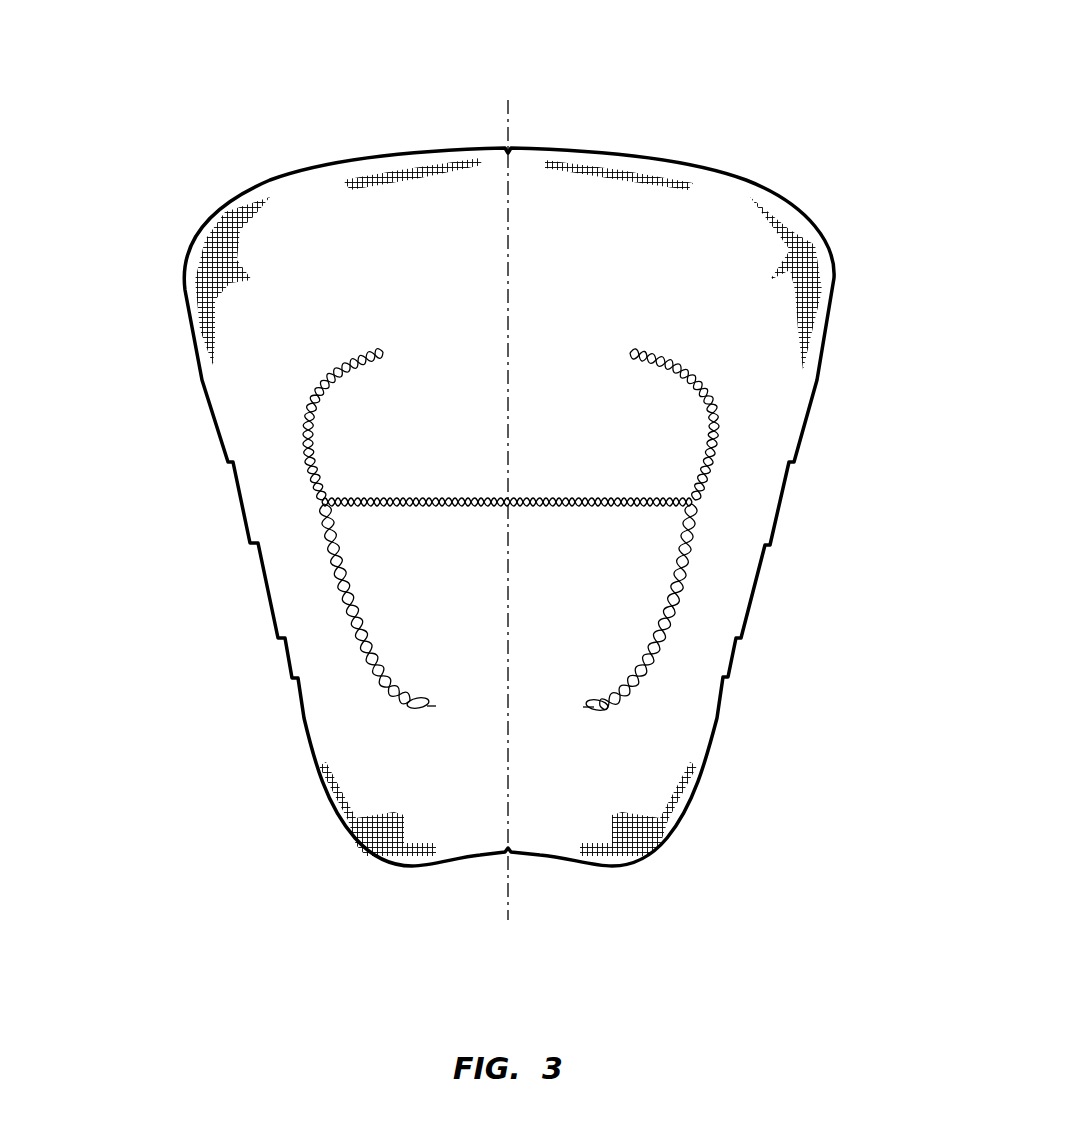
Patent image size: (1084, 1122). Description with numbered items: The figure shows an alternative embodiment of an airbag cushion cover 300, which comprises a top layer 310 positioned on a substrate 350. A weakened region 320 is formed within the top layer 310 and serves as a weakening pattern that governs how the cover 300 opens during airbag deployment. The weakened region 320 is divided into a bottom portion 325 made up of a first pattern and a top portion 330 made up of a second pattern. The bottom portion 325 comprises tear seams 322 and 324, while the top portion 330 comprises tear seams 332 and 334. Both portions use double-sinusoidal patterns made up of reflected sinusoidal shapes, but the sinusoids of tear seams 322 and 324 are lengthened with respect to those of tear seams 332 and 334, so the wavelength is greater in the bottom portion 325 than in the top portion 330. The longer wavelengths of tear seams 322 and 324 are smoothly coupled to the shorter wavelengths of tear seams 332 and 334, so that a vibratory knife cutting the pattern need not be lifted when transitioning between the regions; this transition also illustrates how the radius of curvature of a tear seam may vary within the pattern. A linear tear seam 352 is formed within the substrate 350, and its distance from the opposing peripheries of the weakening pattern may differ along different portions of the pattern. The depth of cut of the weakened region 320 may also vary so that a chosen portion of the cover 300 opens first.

The airbag cushion cover 300 is at (714, 96).
The top layer 310 is at (770, 253).
The weakened region 320 is at (205, 629).
The tear seam 322 is at (430, 708).
The tear seam 324 is at (410, 704).
The bottom portion 325 is at (318, 571).
The top portion 330 is at (428, 304).
The tear seam 332 is at (384, 350).
The tear seam 334 is at (372, 348).
The substrate 350 is at (716, 216).
The linear tear seam 352 is at (587, 709).